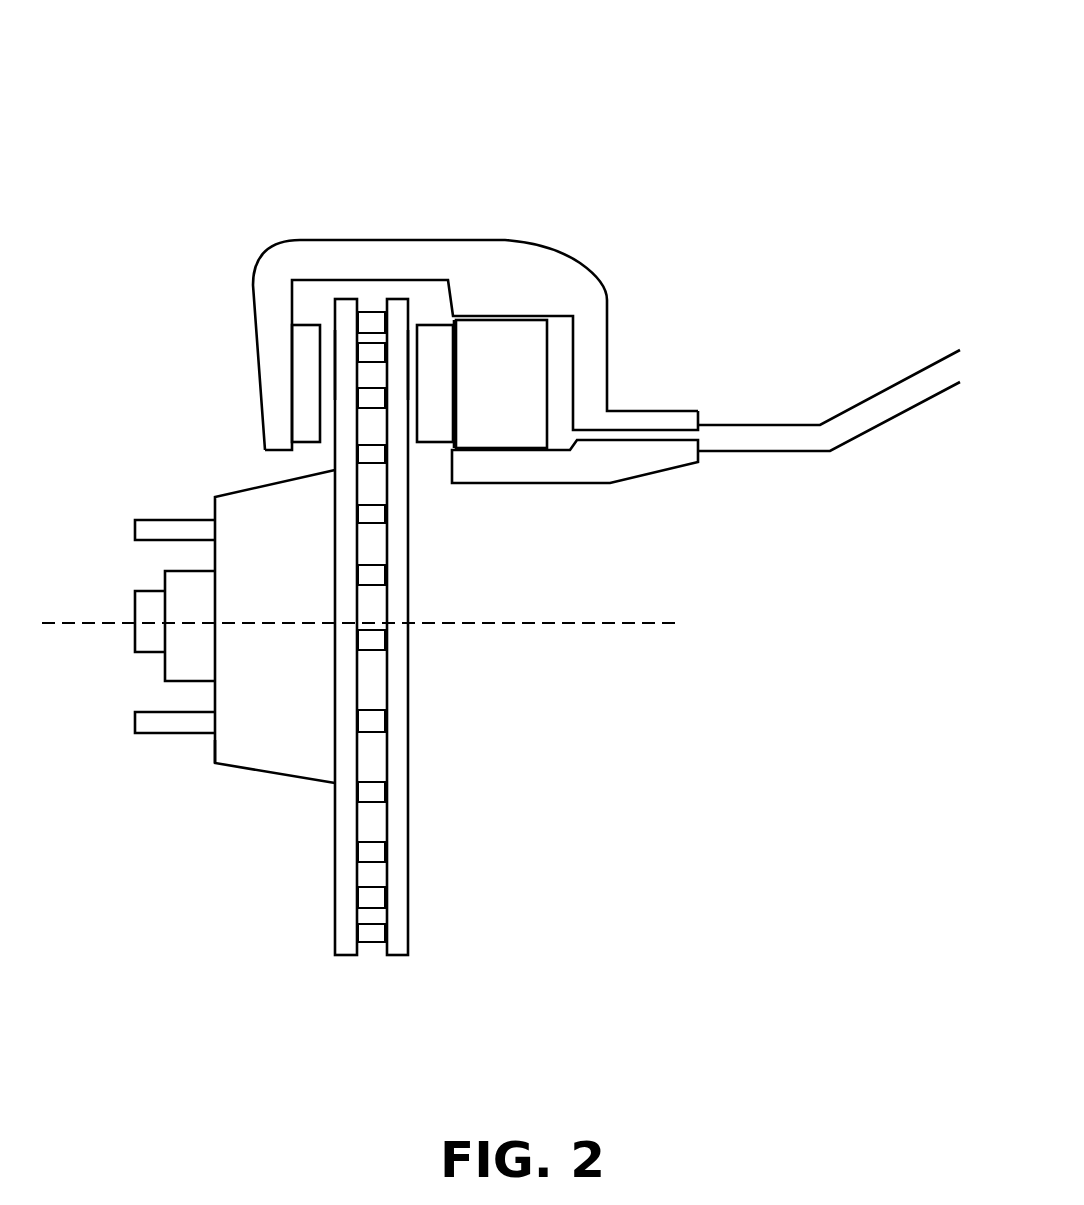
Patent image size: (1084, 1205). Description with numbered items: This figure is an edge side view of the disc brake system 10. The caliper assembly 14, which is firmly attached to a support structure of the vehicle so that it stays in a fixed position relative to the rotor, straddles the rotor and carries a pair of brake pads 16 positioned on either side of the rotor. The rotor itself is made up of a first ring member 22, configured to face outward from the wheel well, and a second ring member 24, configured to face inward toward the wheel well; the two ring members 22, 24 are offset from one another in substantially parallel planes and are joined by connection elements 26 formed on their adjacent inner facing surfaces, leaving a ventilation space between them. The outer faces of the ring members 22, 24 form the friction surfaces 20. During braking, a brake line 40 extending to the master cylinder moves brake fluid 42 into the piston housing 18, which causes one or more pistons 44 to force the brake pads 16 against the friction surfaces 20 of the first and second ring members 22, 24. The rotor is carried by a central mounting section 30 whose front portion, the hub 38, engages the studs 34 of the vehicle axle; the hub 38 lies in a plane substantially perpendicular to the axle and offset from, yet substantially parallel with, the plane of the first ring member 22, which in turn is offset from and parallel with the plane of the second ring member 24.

The disc brake system 10 is at (172, 184).
The caliper assembly 14 is at (351, 258).
The brake pads 16 is at (300, 385).
The piston housing 18 is at (512, 257).
The friction surfaces 20 is at (335, 357).
The first ring member 22 is at (336, 875).
The second ring member 24 is at (405, 858).
The vanes 26 is at (367, 652).
The central mounting section 30 is at (255, 770).
The studs 34 is at (160, 520).
The hub 38 is at (215, 747).
The brake line 40 is at (913, 377).
The brake fluid 42 is at (788, 438).
The pistons 44 is at (533, 367).